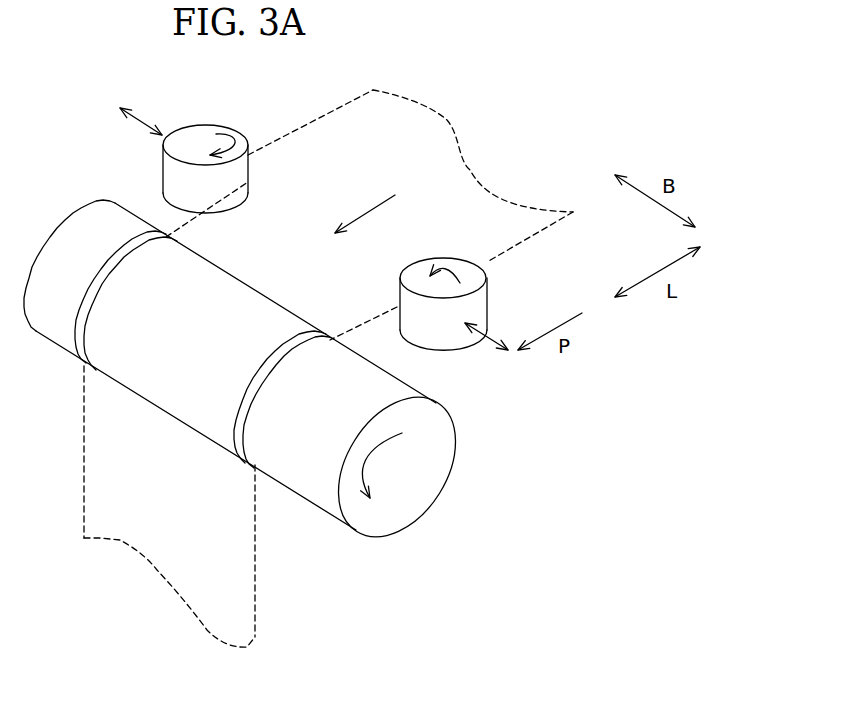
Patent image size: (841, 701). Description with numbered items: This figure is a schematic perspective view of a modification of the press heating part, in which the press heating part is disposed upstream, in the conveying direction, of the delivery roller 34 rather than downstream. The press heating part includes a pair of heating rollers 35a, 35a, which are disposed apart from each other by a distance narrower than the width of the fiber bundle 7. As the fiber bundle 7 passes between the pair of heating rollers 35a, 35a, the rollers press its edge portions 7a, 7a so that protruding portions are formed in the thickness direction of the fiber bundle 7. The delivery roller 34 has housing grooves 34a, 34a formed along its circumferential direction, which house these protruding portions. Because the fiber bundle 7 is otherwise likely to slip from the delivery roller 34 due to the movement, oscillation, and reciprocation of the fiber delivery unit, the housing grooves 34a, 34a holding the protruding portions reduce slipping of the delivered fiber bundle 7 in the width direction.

The delivery roller 34 is at (417, 483).
The housing grooves 34a is at (170, 244).
The heating rollers 35a is at (165, 103).
The fiber bundle 7 is at (460, 180).
The edge portions 7a is at (305, 125).